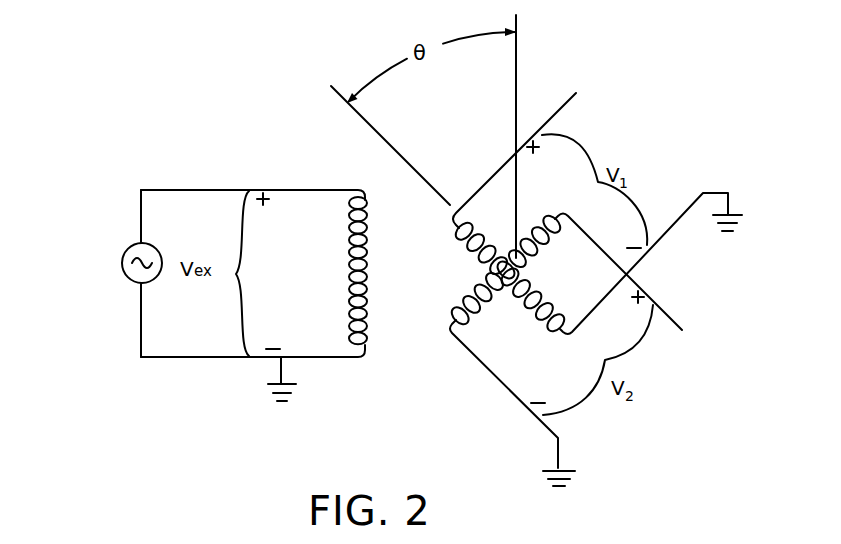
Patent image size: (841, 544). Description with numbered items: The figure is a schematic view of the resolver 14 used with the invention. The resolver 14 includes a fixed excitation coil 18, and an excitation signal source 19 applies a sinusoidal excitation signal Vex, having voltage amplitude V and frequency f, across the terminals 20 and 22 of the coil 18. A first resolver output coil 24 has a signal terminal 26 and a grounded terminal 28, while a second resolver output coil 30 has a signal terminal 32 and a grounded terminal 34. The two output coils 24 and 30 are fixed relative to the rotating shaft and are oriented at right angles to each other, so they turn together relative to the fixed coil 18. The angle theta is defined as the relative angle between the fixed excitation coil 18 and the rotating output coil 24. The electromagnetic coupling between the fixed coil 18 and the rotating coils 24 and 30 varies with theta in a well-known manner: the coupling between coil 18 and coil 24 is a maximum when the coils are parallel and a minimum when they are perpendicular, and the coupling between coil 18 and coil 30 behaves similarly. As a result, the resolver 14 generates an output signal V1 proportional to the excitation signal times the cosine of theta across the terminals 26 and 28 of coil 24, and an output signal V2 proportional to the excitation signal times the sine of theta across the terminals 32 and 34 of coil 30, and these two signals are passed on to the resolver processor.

The resolver 14 is at (125, 378).
The fixed excitation coil 18 is at (349, 370).
The excitation signal source 19 is at (122, 262).
The terminal 20 is at (297, 190).
The terminal 22 is at (313, 357).
The first resolver output coil 24 is at (461, 200).
The signal terminal 26 is at (554, 116).
The grounded terminal 28 is at (702, 190).
The second resolver output coil 30 is at (462, 357).
The signal terminal 32 is at (664, 310).
The grounded terminal 34 is at (556, 440).